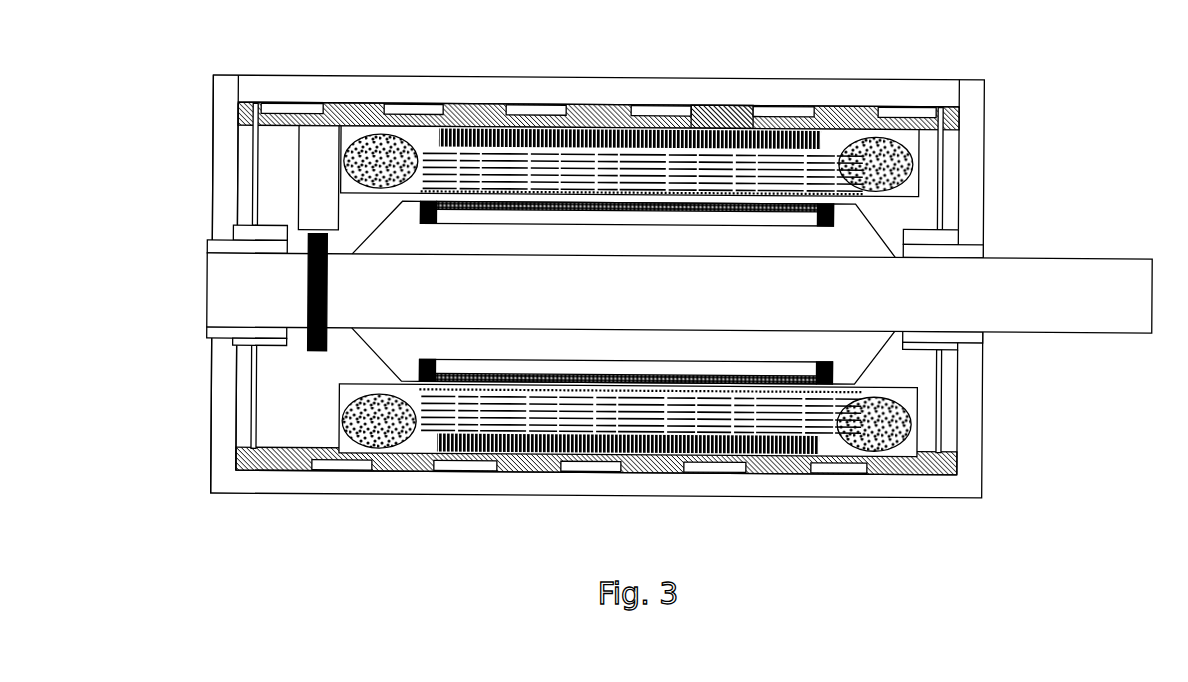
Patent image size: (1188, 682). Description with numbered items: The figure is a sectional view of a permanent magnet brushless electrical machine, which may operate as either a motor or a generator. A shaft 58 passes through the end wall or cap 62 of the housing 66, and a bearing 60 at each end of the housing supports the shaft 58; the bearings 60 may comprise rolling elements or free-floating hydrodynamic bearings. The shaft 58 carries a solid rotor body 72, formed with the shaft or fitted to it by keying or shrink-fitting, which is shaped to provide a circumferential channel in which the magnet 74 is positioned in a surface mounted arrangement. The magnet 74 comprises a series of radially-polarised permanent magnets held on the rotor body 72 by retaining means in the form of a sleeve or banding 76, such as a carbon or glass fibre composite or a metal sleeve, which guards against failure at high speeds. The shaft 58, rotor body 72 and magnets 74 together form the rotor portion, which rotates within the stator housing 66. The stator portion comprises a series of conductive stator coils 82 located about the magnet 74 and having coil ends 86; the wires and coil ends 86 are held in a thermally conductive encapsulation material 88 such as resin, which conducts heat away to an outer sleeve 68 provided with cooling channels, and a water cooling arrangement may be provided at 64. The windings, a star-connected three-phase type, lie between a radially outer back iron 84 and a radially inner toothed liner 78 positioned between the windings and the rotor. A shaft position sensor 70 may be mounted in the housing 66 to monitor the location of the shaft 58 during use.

The shaft 58 is at (230, 288).
The bearing 60 is at (207, 243).
The end wall or cap 62 is at (217, 227).
The water cooling arrangement 64 is at (263, 197).
The housing 66 is at (262, 83).
The outer sleeve 68 is at (298, 102).
The shaft position sensor 70 is at (320, 144).
The rotor body 72 is at (378, 227).
The magnet 74 is at (462, 195).
The sleeve or banding 76 is at (483, 200).
The toothed liner 78 is at (527, 181).
The stator coils 82 is at (648, 163).
The back iron 84 is at (590, 178).
The coil ends 86 is at (870, 133).
The encapsulation material 88 is at (902, 131).